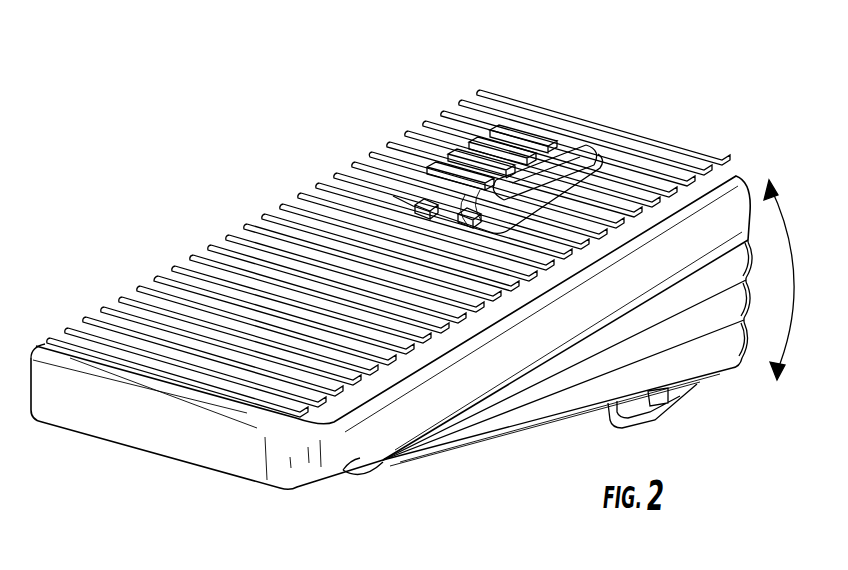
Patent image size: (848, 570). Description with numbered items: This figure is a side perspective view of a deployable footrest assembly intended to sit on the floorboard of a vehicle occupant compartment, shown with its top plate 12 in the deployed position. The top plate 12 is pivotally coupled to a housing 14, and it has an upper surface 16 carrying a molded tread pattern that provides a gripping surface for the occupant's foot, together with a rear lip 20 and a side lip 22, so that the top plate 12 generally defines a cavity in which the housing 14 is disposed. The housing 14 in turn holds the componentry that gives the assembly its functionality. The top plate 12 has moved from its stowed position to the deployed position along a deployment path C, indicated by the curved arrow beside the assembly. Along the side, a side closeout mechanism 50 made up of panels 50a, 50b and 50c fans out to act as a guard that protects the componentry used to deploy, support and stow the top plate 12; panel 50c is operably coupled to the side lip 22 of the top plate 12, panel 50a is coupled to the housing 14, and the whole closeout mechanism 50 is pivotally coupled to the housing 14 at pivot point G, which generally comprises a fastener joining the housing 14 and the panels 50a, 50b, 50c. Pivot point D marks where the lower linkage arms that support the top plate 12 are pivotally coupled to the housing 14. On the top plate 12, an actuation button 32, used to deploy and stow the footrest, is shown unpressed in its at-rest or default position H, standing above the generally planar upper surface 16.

The top plate 12 is at (430, 112).
The housing 14 is at (539, 434).
The upper surface 16 is at (350, 278).
The rear lip 20 is at (140, 431).
The side lip 22 is at (527, 350).
The actuation button 32 is at (540, 140).
The side closeout mechanism 50 is at (740, 362).
The panel 50a is at (714, 368).
The panel 50b is at (717, 327).
The panel 50c is at (713, 293).
The deployment path C is at (794, 285).
The pivot point D is at (655, 398).
The pivot point G is at (375, 456).
The at-rest position H is at (575, 165).